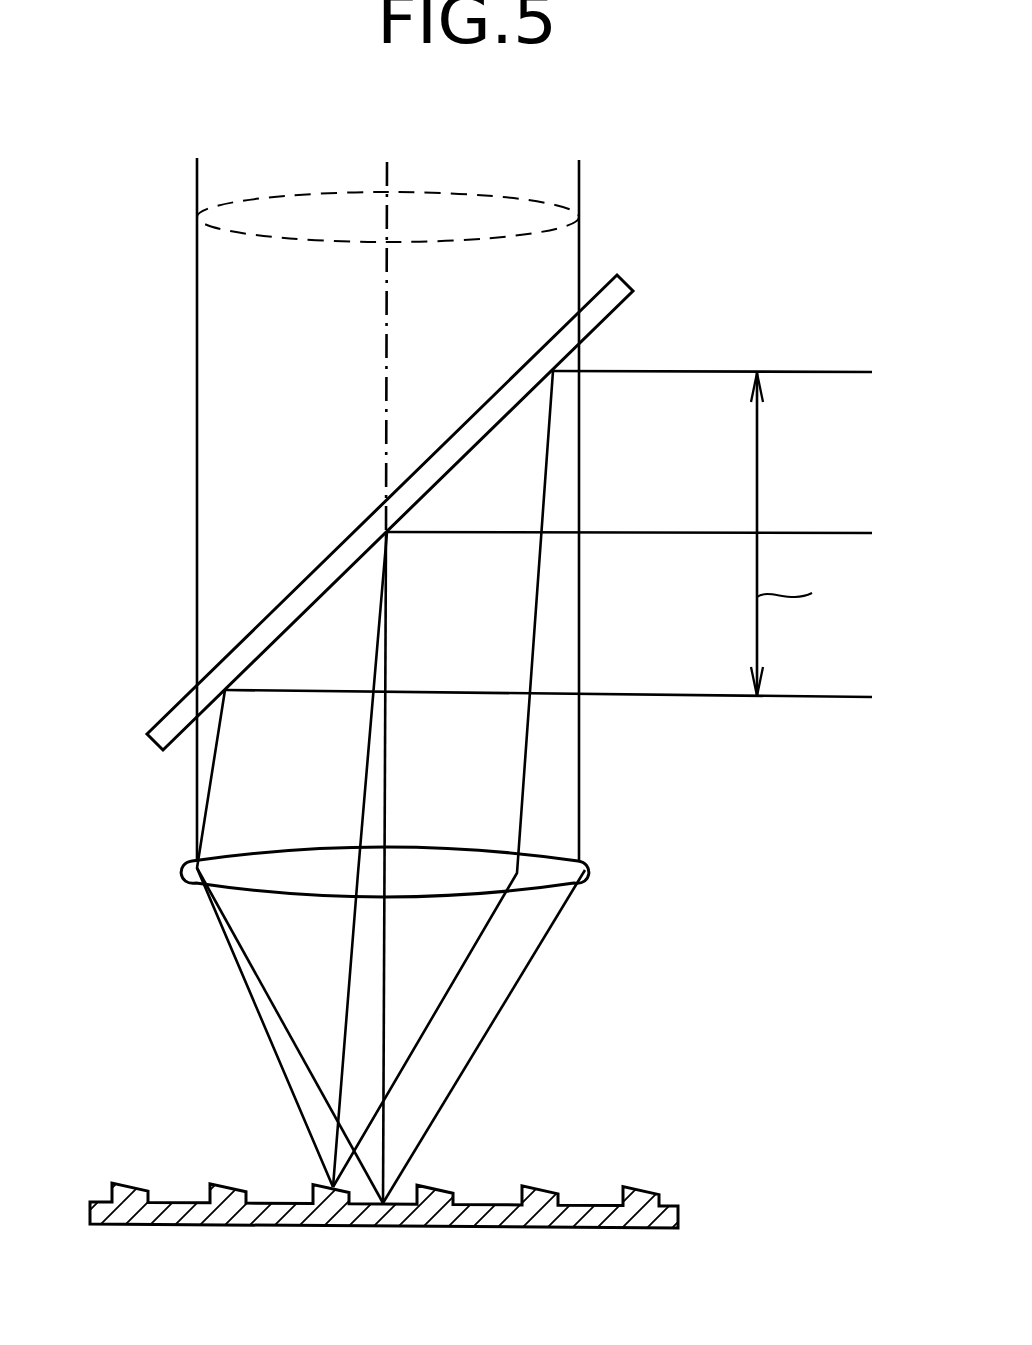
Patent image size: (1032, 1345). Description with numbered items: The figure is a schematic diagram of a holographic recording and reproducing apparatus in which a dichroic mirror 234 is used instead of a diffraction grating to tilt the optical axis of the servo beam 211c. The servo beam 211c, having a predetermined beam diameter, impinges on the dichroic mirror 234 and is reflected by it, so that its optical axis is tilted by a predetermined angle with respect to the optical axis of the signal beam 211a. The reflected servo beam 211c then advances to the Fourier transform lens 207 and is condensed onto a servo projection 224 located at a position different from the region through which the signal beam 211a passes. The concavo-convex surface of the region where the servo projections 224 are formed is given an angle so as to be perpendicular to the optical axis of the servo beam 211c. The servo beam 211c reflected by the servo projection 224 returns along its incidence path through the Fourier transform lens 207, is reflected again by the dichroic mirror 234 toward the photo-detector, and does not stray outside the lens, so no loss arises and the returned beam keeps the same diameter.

The signal beam 211a is at (197, 340).
The dichroic mirror 234 is at (612, 313).
The servo beam 211c is at (805, 698).
The Fourier transform lens 207 is at (587, 877).
The servo projection 224 is at (318, 1183).